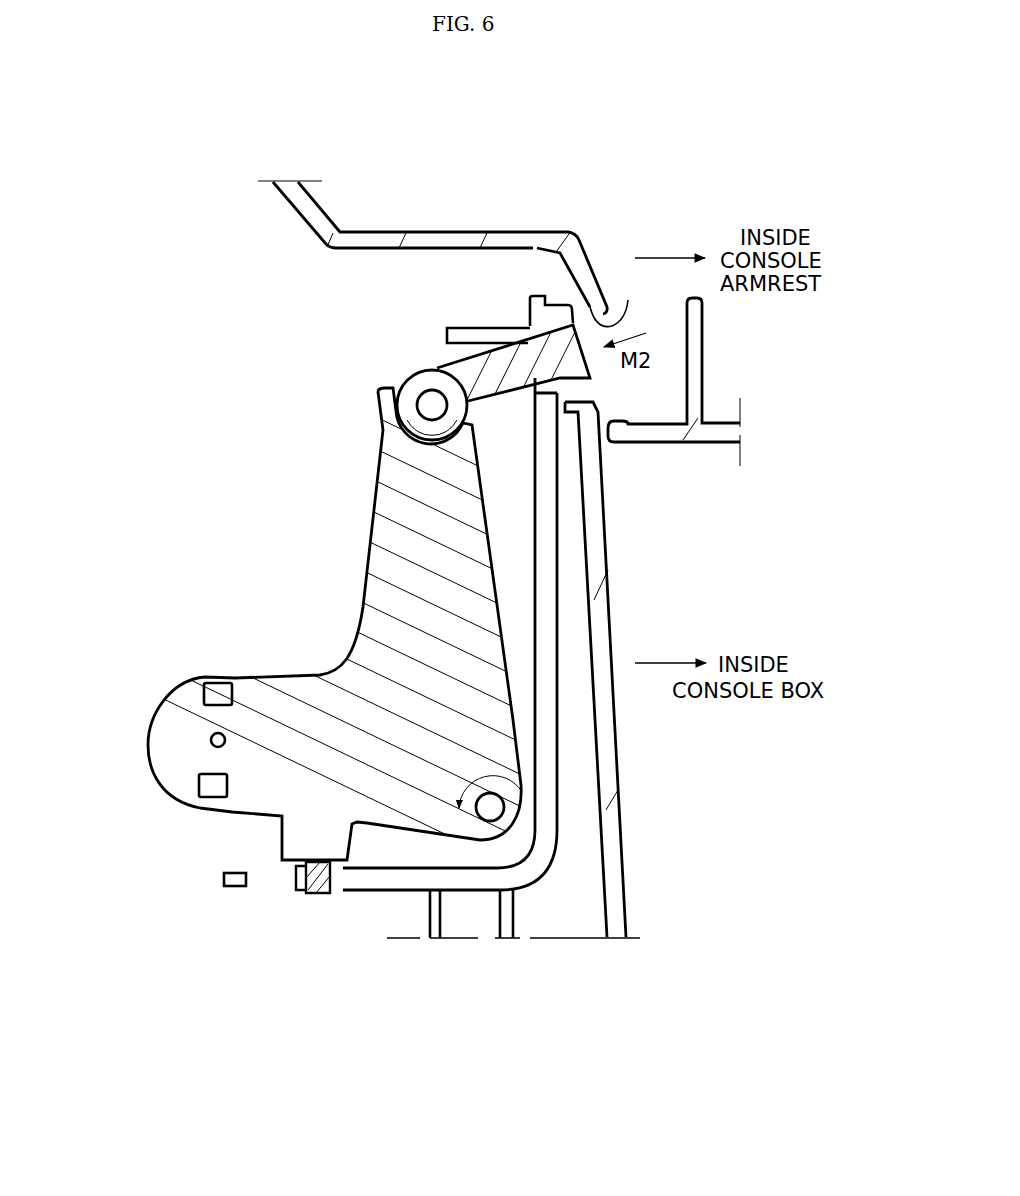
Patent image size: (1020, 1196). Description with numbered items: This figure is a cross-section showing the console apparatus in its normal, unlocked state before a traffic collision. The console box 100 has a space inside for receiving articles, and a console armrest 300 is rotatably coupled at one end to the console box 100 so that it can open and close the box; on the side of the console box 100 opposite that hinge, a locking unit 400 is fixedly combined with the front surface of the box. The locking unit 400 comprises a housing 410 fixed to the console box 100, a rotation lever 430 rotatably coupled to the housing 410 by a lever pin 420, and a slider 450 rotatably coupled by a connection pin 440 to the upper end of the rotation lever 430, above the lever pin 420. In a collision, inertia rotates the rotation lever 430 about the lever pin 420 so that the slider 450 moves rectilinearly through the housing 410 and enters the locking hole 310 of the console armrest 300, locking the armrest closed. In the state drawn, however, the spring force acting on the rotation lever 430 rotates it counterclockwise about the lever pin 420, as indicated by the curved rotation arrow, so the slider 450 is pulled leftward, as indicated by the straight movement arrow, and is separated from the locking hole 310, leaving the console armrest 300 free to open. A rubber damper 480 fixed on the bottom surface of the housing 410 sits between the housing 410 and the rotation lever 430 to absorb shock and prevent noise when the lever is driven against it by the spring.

The console box 100 is at (610, 838).
The console armrest 300 is at (373, 235).
The locking hole 310 is at (628, 300).
The locking unit 400 is at (178, 668).
The housing 410 is at (537, 855).
The lever pin 420 is at (490, 815).
The rotation lever 430 is at (385, 612).
The connection pin 440 is at (432, 405).
The slider 450 is at (470, 372).
The damper 480 is at (318, 895).